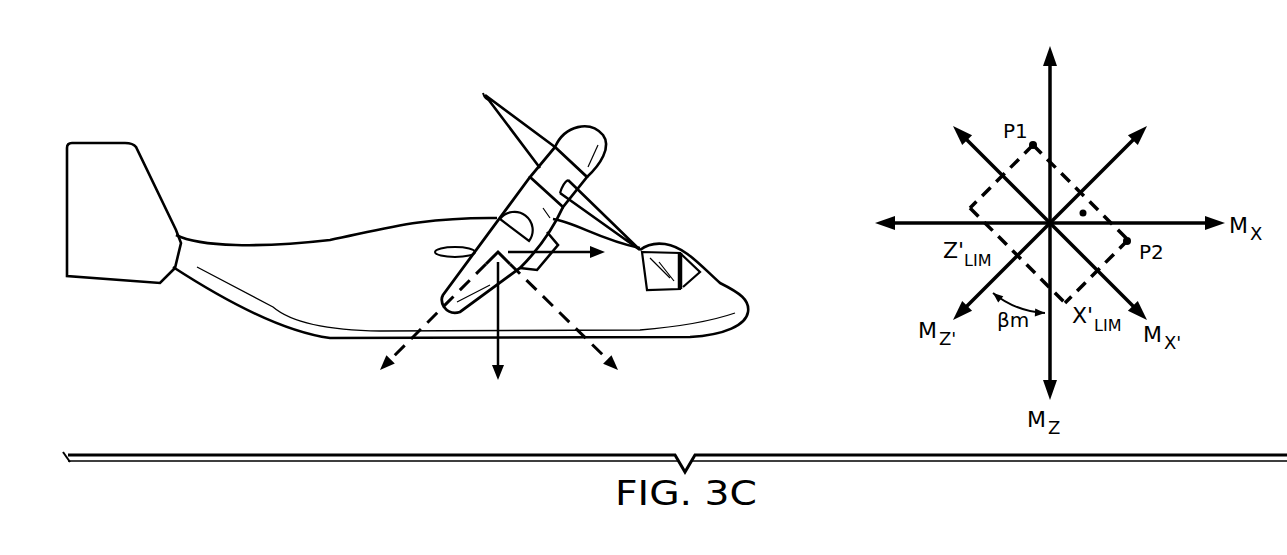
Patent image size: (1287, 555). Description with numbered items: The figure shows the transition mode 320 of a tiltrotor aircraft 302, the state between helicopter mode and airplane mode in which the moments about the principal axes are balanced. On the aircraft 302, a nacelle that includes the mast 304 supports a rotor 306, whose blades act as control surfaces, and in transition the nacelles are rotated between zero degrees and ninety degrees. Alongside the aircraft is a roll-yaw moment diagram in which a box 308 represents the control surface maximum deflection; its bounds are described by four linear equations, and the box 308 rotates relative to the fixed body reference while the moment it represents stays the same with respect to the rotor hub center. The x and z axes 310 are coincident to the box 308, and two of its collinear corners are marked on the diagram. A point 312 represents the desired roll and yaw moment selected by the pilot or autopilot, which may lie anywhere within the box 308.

The transition mode 320 is at (275, 100).
The tiltrotor aircraft 302 is at (229, 298).
The mast 304 is at (510, 197).
The rotor 306 is at (491, 101).
The box 308 is at (1071, 183).
The x and z axes 310 is at (986, 178).
The point 312 is at (1087, 212).